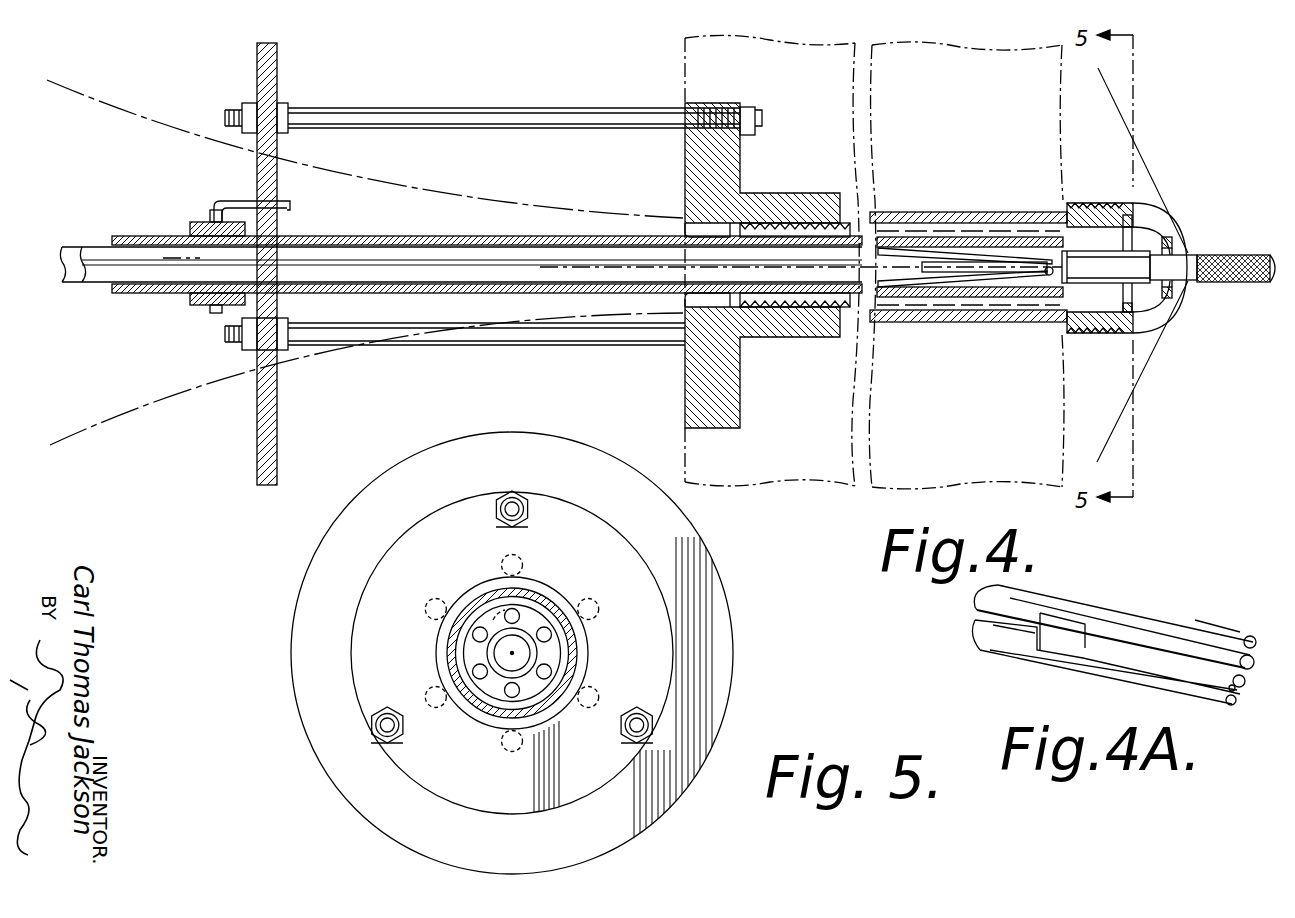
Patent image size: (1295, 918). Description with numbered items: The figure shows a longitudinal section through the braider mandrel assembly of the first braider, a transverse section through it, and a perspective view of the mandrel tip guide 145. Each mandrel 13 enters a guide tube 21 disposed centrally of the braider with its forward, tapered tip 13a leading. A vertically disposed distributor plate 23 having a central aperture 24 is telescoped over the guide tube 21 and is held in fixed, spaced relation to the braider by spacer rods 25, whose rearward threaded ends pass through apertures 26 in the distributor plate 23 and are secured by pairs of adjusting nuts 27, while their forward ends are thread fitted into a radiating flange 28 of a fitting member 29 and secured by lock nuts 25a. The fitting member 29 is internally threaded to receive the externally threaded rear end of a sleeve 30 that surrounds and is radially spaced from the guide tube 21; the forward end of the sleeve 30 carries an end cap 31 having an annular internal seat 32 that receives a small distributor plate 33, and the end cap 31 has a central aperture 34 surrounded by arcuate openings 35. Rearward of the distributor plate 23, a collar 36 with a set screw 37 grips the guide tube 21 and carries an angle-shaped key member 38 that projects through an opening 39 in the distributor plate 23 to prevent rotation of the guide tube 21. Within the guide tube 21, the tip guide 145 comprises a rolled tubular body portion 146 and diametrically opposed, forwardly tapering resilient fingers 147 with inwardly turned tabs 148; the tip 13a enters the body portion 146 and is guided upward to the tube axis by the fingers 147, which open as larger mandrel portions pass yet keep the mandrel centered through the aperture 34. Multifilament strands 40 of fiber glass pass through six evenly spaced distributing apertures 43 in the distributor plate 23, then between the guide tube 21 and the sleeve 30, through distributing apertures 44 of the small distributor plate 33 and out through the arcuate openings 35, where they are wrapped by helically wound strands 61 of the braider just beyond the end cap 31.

In FIG. 4, the mandrel 13 is at (460, 273).
In FIG. 4, the tapered tip 13a is at (827, 270).
In FIG. 4, the guide tube 21 is at (137, 294).
In FIG. 4, the distributor plate 23 is at (283, 58).
In FIG. 5, the distributor plate 23 is at (553, 448).
In FIG. 4, the central aperture 24 is at (303, 237).
In FIG. 4, the spacer rods 25 is at (579, 110).
In FIG. 5, the spacer rods 25 is at (530, 508).
In FIG. 4, the lock nuts 25a is at (757, 108).
In FIG. 5, the lock nuts 25a is at (388, 740).
In FIG. 4, the apertures 26 is at (249, 104).
In FIG. 4, the adjusting nuts 27 is at (285, 105).
In FIG. 5, the adjusting nuts 27 is at (497, 523).
In FIG. 4, the radiating flange 28 is at (722, 160).
In FIG. 5, the radiating flange 28 is at (593, 530).
In FIG. 4, the fitting member 29 is at (685, 200).
In FIG. 4, the sleeve 30 is at (963, 212).
In FIG. 4, the end cap 31 is at (1120, 178).
In FIG. 5, the end cap 31 is at (572, 650).
In FIG. 4, the annular internal seat 32 is at (1140, 223).
In FIG. 4, the small distributor plate 33 is at (1160, 330).
In FIG. 4, the central aperture 34 is at (1177, 252).
In FIG. 4, the arcuate openings 35 is at (1163, 307).
In FIG. 5, the arcuate openings 35 is at (493, 617).
In FIG. 4, the collar 36 is at (205, 224).
In FIG. 4, the set screw 37 is at (216, 313).
In FIG. 4, the angle-shaped key member 38 is at (287, 202).
In FIG. 4, the opening 39 is at (288, 212).
In FIG. 4, the multifilament strands 40 is at (118, 104).
In FIG. 4, the distributing apertures 43 is at (275, 352).
In FIG. 5, the distributing apertures 43 is at (527, 558).
In FIG. 4, the distributing apertures 44 is at (1107, 333).
In FIG. 5, the distributing apertures 44 is at (547, 673).
In FIG. 4, the strands 61 is at (1140, 155).
In FIG. 4, the mandrel tip guide 145 is at (917, 283).
In FIG. 4A, the mandrel tip guide 145 is at (978, 652).
In FIG. 4, the tubular body portion 146 is at (902, 243).
In FIG. 4A, the tubular body portion 146 is at (1040, 597).
In FIG. 4, the fingers 147 is at (987, 283).
In FIG. 4A, the fingers 147 is at (1130, 617).
In FIG. 4, the inwardly turned tabs 148 is at (1049, 276).
In FIG. 4A, the inwardly turned tabs 148 is at (1233, 691).